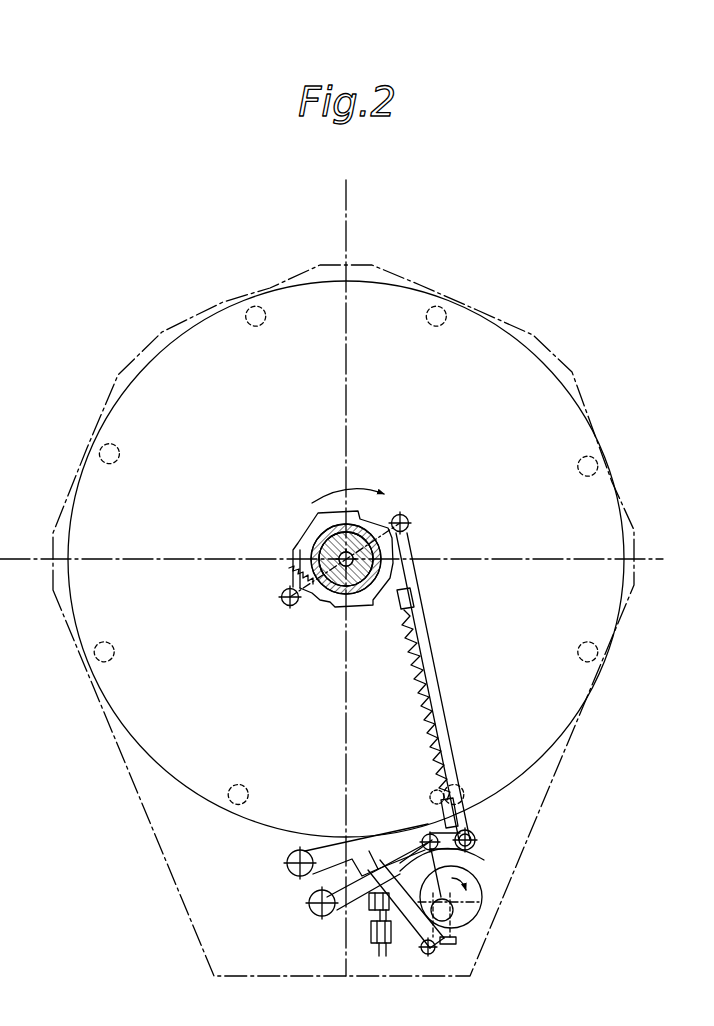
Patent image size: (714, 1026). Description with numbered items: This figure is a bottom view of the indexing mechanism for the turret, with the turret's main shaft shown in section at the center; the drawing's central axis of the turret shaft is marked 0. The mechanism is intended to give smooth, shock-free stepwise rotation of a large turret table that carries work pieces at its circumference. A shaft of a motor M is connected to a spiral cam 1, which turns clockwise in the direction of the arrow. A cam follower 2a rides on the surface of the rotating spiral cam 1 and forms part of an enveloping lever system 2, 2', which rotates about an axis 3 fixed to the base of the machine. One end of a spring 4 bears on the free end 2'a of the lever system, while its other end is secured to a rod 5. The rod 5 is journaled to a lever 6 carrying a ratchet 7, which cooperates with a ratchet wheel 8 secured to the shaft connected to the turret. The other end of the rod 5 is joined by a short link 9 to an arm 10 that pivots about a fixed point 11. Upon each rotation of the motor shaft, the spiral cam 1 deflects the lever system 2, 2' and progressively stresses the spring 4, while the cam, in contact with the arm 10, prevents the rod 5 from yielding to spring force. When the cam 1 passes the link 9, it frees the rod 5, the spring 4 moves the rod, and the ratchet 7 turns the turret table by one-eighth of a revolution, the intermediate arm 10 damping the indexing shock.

The axis of rotation / hub 0 is at (347, 540).
The spiral cam 1 is at (470, 910).
The enveloping lever system 2 is at (385, 927).
The cam follower 2a is at (434, 952).
The enveloping lever system 2' is at (366, 818).
The free end of the enveloping lever system 2'a is at (470, 794).
The axis 3 is at (287, 863).
The spring 4 is at (412, 683).
The rod 5 is at (425, 640).
The lever 6 is at (400, 515).
The ratchet 7 is at (288, 568).
The ratchet wheel 8 is at (308, 535).
The short link 9 is at (474, 838).
The arm 10 is at (480, 858).
The fixed point 11 is at (310, 907).
The motor M is at (447, 905).